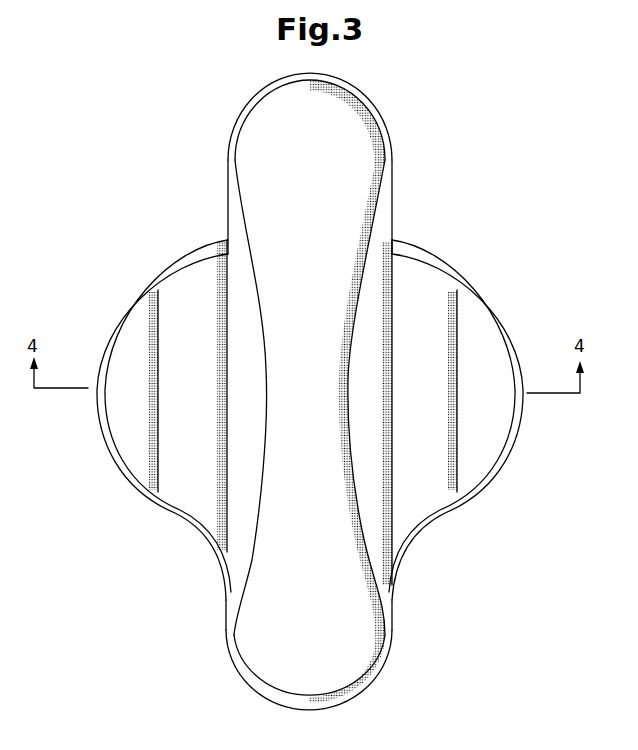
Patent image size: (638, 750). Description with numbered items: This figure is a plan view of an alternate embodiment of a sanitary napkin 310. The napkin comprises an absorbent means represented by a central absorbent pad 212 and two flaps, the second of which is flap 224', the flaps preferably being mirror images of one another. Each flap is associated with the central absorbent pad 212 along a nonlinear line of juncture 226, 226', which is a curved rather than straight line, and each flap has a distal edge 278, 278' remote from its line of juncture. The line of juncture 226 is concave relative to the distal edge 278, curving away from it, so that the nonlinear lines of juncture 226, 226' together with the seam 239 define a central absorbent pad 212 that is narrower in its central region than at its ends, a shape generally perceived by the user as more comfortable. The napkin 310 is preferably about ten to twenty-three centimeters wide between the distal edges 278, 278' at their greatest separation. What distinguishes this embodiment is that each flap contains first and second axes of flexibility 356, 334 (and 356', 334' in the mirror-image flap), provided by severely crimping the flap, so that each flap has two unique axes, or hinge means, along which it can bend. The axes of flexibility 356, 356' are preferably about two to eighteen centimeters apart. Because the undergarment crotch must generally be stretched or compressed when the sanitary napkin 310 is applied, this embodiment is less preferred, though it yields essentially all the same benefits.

The sanitary napkin 310 is at (211, 151).
The central absorbent pad 212 is at (410, 153).
The seam 239 is at (366, 101).
The nonlinear line of juncture 226 is at (206, 397).
The nonlinear line of juncture 226' is at (382, 391).
The flap 224' is at (472, 416).
The distal edge 278 is at (138, 427).
The distal edge 278' is at (482, 427).
The axis of flexibility 334 is at (95, 391).
The axis of flexibility 334' is at (516, 391).
The axis of flexibility 356 is at (163, 396).
The axis of flexibility 356' is at (440, 412).